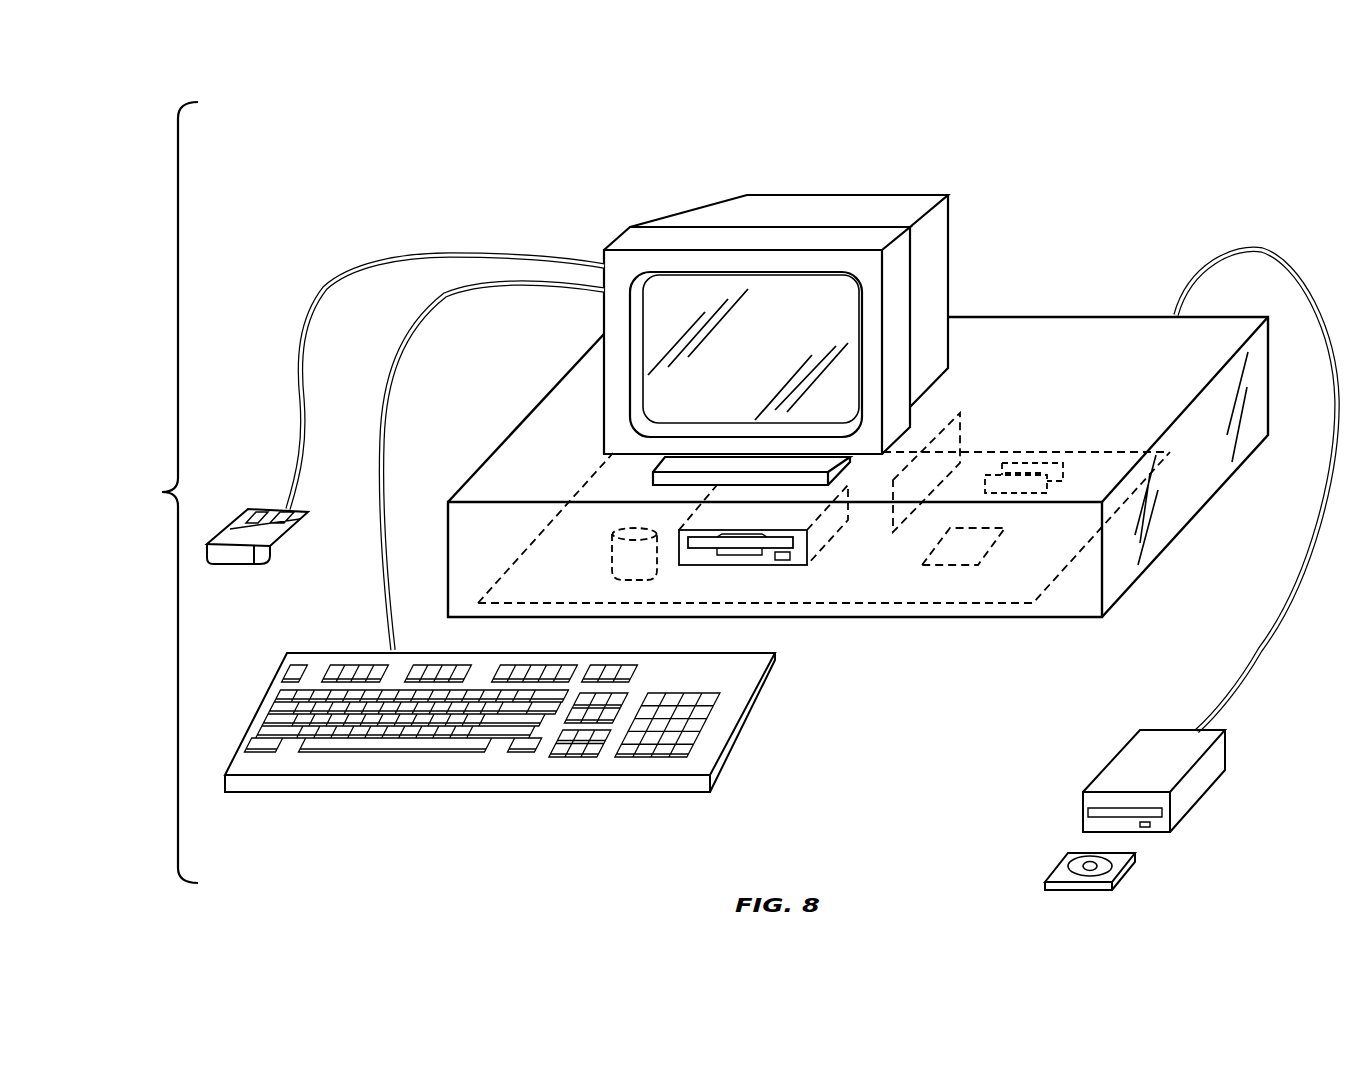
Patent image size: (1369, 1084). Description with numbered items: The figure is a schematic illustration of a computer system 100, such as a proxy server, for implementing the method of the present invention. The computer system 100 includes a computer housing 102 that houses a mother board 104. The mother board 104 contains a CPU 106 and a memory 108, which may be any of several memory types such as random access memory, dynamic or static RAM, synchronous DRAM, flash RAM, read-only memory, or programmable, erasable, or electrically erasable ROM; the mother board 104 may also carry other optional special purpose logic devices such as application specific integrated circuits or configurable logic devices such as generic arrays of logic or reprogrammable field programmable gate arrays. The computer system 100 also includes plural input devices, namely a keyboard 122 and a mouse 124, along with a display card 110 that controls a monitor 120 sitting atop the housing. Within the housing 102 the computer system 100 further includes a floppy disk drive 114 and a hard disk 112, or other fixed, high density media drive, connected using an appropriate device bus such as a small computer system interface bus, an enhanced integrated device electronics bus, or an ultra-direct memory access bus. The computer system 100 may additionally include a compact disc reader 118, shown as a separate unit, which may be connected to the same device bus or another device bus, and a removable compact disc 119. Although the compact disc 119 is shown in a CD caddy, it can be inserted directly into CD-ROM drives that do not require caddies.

The computer system 100 is at (156, 502).
The computer housing 102 is at (1270, 368).
The mother board 104 is at (1067, 452).
The CPU 106 is at (953, 565).
The memory 108 is at (962, 427).
The display card 110 is at (1010, 463).
The hard disk 112 is at (635, 580).
The floppy disk drive 114 is at (787, 565).
The compact disc reader 118 is at (1128, 743).
The compact disc 119 is at (1118, 870).
The monitor 120 is at (857, 193).
The keyboard 122 is at (767, 710).
The mouse 124 is at (288, 535).